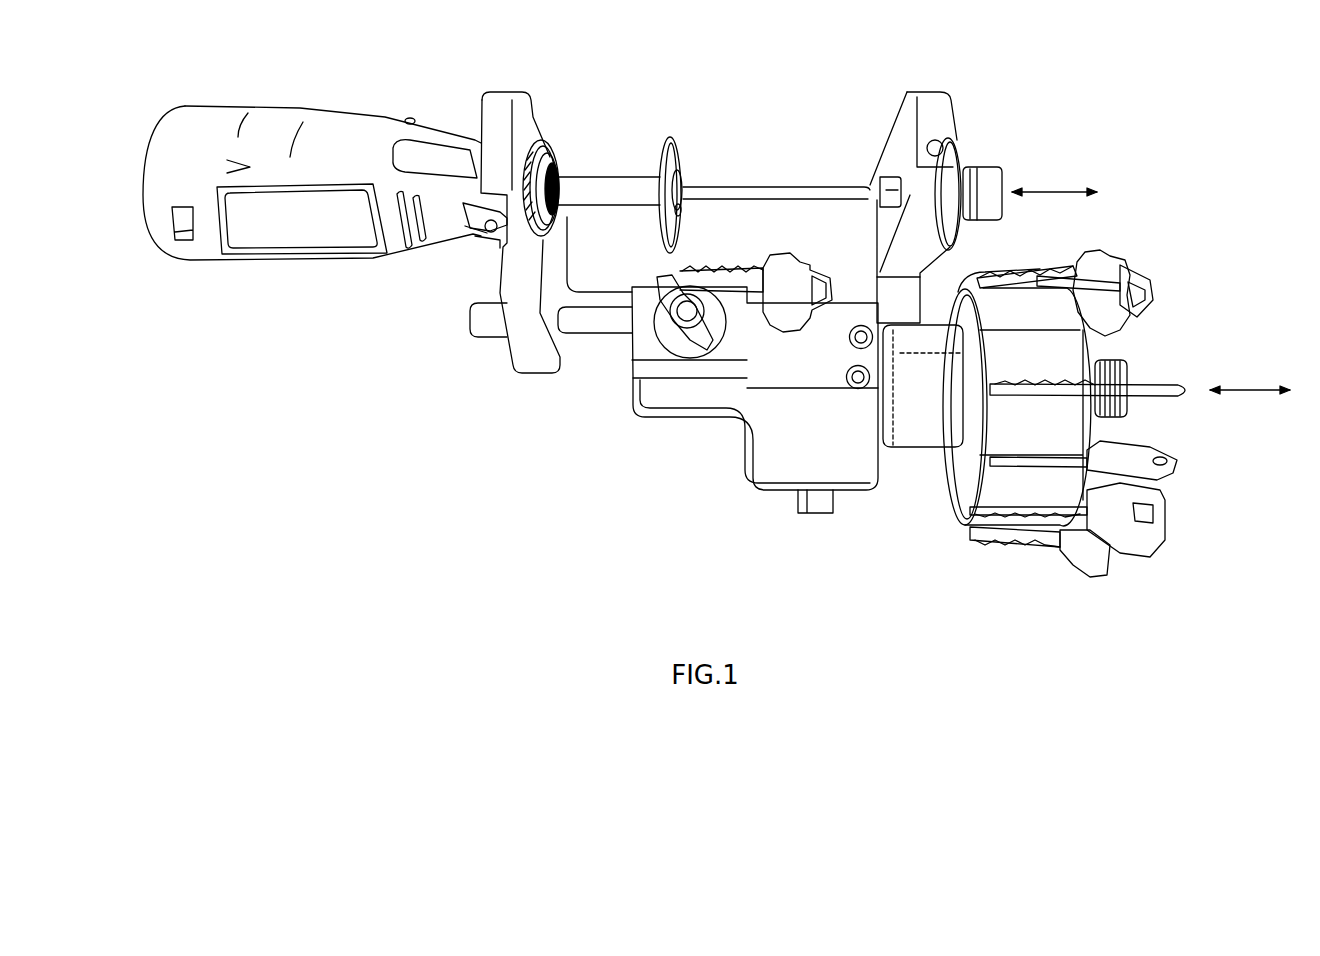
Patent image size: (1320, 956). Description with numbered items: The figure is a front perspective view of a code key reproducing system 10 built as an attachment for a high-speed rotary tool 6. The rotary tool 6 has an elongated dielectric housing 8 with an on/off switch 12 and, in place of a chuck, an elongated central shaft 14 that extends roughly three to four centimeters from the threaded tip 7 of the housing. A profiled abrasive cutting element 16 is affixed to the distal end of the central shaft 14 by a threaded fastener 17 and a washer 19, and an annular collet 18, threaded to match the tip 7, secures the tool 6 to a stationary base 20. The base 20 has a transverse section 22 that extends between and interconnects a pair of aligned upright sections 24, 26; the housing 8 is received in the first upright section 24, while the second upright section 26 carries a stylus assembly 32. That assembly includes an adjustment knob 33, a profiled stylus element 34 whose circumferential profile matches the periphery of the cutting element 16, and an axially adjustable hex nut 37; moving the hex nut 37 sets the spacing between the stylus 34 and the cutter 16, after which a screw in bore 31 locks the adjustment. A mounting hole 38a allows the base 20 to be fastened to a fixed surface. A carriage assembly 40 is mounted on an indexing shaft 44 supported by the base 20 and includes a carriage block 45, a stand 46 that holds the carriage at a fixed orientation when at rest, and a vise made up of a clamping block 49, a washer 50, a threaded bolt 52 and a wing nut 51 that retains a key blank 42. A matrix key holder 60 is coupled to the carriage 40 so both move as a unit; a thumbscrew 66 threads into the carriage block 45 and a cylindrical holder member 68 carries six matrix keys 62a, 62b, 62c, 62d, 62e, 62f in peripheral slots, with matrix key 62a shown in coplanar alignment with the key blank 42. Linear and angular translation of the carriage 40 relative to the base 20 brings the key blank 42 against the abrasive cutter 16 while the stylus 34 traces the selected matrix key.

The rotary tool 6 is at (342, 268).
The dielectric housing 8 is at (308, 147).
The code key reproducing system 10 is at (433, 432).
The on/off switch 12 is at (190, 241).
The central shaft 14 is at (623, 199).
The profiled abrasive cutting element 16 is at (667, 140).
The threaded fastener 17 is at (683, 184).
The annular collet 18 is at (553, 148).
The threaded tip 7 is at (558, 161).
The washer 19 is at (680, 214).
The stationary base 20 is at (970, 114).
The transverse section 22 is at (760, 198).
The upright section 24 is at (537, 117).
The upright section 26 is at (898, 137).
The bore 31 is at (935, 132).
The stylus assembly 32 is at (1015, 167).
The adjustment knob 33 is at (969, 182).
The profiled stylus element 34 is at (956, 234).
The hex nut 37 is at (887, 199).
The mounting hole 38a is at (487, 247).
The carriage assembly 40 is at (710, 447).
The key blank 42 is at (788, 276).
The indexing shaft 44 is at (483, 323).
The carriage block 45 is at (795, 441).
The stand 46 is at (820, 507).
The clamping block 49 is at (643, 333).
The washer 50 is at (717, 327).
The wing nut 51 is at (672, 290).
The threaded bolt 52 is at (670, 313).
The matrix key holder 60 is at (923, 535).
The matrix key 62a is at (1153, 284).
The matrix key 62b is at (1093, 255).
The matrix key 62c is at (1087, 557).
The matrix key 62d is at (1132, 542).
The matrix key 62e is at (1177, 462).
The matrix key 62f is at (1148, 392).
The thumbscrew 66 is at (1125, 372).
The cylindrical holder member 68 is at (942, 484).